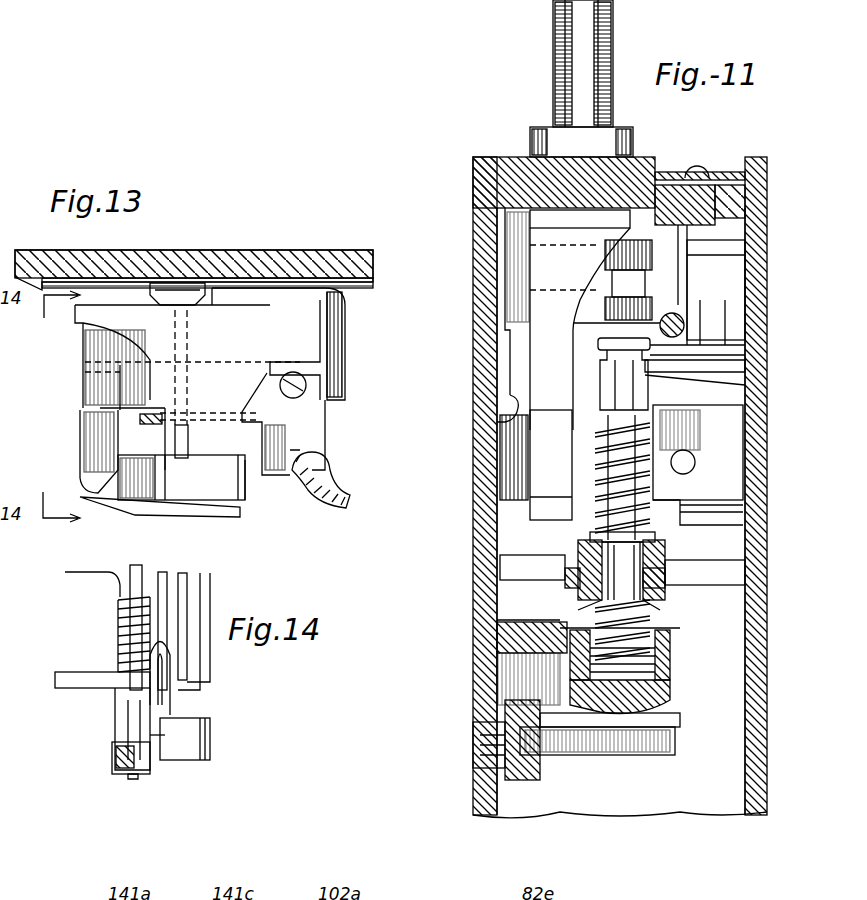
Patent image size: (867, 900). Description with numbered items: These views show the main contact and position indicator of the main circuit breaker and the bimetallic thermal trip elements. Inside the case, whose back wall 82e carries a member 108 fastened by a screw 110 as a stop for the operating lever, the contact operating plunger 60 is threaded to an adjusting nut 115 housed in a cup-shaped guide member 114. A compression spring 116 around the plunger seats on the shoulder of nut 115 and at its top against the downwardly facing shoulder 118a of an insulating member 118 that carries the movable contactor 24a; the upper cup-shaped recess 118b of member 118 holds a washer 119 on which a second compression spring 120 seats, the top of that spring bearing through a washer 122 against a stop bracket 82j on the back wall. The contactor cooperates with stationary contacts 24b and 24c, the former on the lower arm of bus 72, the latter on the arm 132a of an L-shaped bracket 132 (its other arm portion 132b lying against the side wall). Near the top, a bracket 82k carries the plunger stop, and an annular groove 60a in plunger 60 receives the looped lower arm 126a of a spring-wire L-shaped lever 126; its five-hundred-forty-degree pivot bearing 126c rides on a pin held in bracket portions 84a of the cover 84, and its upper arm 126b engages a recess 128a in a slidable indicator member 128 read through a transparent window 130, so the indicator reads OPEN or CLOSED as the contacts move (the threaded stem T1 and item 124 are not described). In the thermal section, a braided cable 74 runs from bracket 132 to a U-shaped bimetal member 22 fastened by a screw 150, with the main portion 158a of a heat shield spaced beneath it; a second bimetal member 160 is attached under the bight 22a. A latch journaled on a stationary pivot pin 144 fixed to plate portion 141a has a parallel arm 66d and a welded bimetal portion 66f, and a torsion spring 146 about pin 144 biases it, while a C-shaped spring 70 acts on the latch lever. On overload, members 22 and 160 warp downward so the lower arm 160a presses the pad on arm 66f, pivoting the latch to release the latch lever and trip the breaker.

In FIG. 11, the threaded stem T1 is at (605, 22).
In FIG. 11, the plastic transparent window 130 is at (695, 168).
In FIG. 11, the slidable indicator member 128 is at (715, 195).
In FIG. 11, the recess 128a is at (730, 215).
In FIG. 11, the L-shaped lever 126 is at (690, 250).
In FIG. 11, the upper arm 126b is at (700, 262).
In FIG. 11, the pivot bearing 126c is at (684, 320).
In FIG. 11, the lower arm 126a is at (652, 350).
In FIG. 11, the bracket 82k is at (615, 262).
In FIG. 11, the nut 124 is at (640, 300).
In FIG. 11, the contact operating plunger 60 is at (640, 380).
In FIG. 11, the annular groove 60a is at (748, 365).
In FIG. 11, the bracket portions 84a is at (748, 388).
In FIG. 11, the cover 84 is at (756, 700).
In FIG. 11, the stop bracket 82j is at (508, 406).
In FIG. 11, the washer 122 is at (505, 430).
In FIG. 11, the bus 72 is at (540, 476).
In FIG. 11, the block portion 132b is at (720, 428).
In FIG. 11, the L-shaped bracket 132 is at (746, 452).
In FIG. 11, the arm 132a is at (728, 512).
In FIG. 11, the compression spring 120 is at (688, 474).
In FIG. 11, the stationary contact 24b is at (530, 518).
In FIG. 11, the stationary contact 24c is at (665, 522).
In FIG. 11, the movable contactor 24a is at (725, 578).
In FIG. 11, the cup-shaped recess 118b is at (655, 520).
In FIG. 11, the washer 119 is at (590, 540).
In FIG. 11, the insulating member 118 is at (565, 588).
In FIG. 11, the downwardly facing shoulder 118a is at (662, 603).
In FIG. 11, the back wall 82e is at (500, 612).
In FIG. 11, the compression spring 116 is at (655, 628).
In FIG. 11, the adjusting nut 115 is at (672, 660).
In FIG. 11, the cup-shaped guide member 114 is at (658, 694).
In FIG. 11, the member 108 is at (612, 745).
In FIG. 11, the screw 110 is at (473, 752).
In FIG. 13, the portion of plate 141a is at (228, 270).
In FIG. 13, the bight 22a is at (88, 345).
In FIG. 13, the main portion of heat shield 158a is at (300, 338).
In FIG. 14, the main portion of heat shield 158a is at (210, 657).
In FIG. 13, the screw 150 is at (306, 386).
In FIG. 13, the bimetal member 22 is at (312, 425).
In FIG. 14, the bimetal member 22 is at (187, 590).
In FIG. 13, the cable 74 is at (320, 490).
In FIG. 13, the second bimetal member 160 is at (90, 433).
In FIG. 14, the second bimetal member 160 is at (176, 702).
In FIG. 13, the stationary pivot pin 144 is at (175, 440).
In FIG. 14, the stationary pivot pin 144 is at (130, 580).
In FIG. 13, the arm 66d is at (150, 505).
In FIG. 14, the arm 66d is at (112, 765).
In FIG. 13, the bimetal portion 66f is at (245, 497).
In FIG. 14, the bimetal portion 66f is at (195, 732).
In FIG. 14, the torsion spring 146 is at (118, 625).
In FIG. 14, the spring 70 is at (92, 680).
In FIG. 14, the lower arm 160a is at (156, 742).